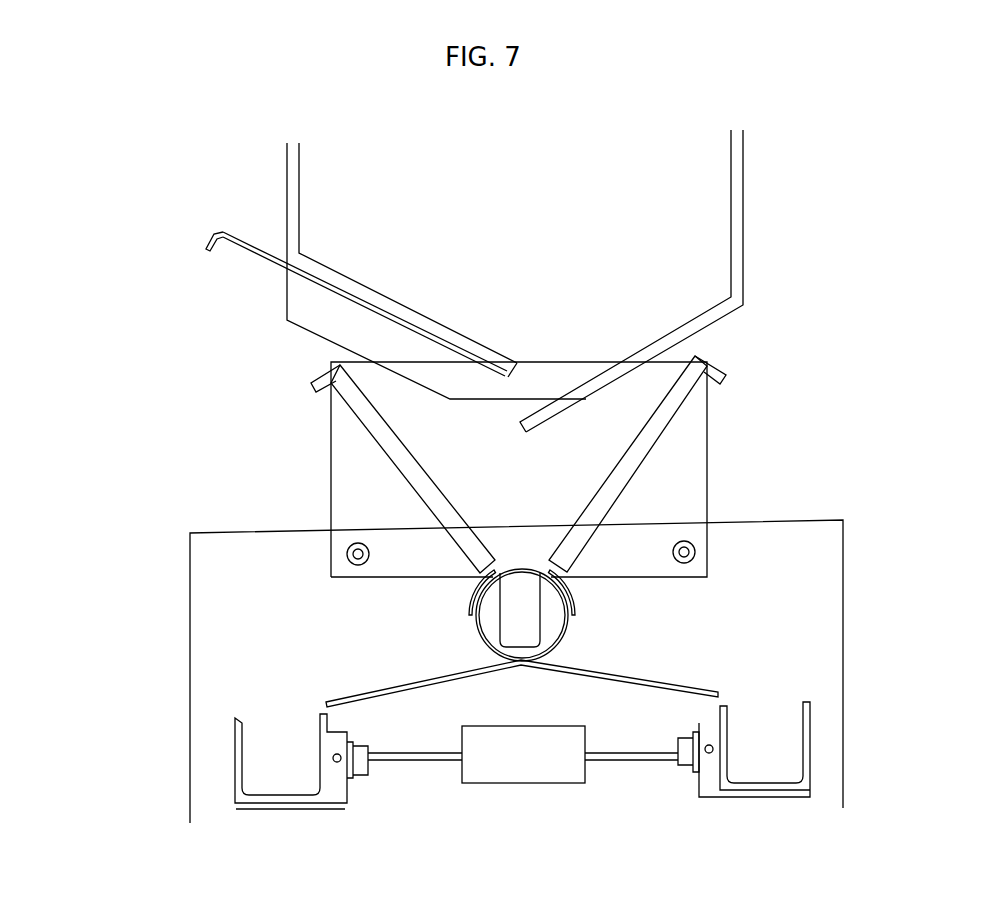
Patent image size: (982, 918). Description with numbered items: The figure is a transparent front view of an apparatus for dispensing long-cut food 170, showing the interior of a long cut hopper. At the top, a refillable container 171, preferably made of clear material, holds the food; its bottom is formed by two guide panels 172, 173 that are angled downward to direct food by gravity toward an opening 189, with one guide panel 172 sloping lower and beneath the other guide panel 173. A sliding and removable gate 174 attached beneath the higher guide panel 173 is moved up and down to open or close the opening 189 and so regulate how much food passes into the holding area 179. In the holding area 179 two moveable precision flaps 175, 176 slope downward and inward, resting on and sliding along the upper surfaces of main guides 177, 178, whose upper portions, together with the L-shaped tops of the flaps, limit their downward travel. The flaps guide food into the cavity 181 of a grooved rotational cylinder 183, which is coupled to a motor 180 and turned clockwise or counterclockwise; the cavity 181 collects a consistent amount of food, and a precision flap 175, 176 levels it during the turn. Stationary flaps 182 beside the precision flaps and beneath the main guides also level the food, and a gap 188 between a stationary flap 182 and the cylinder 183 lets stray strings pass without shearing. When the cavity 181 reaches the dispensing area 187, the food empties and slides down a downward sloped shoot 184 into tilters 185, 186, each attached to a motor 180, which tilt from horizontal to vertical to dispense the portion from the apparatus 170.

The apparatus for dispensing long-cut food 170 is at (327, 62).
The refillable container 171 is at (645, 213).
The guide panel 172 is at (746, 268).
The guide panel 173 is at (288, 188).
The sliding and removable gate 174 is at (210, 238).
The precision flap 175 is at (328, 375).
The precision flap 176 is at (728, 369).
The main guide 177 is at (672, 432).
The main guide 178 is at (365, 437).
The holding area 179 is at (540, 485).
The motor 180 is at (521, 785).
The cavity 181 is at (527, 633).
The stationary flap 182 is at (580, 592).
The grooved rotational cylinder 183 is at (568, 628).
The downward sloped shoot 184 is at (665, 680).
The tilter 185 is at (755, 748).
The tilter 186 is at (277, 773).
The dispensing area 187 is at (300, 663).
The gap 188 is at (473, 610).
The opening 189 is at (538, 393).